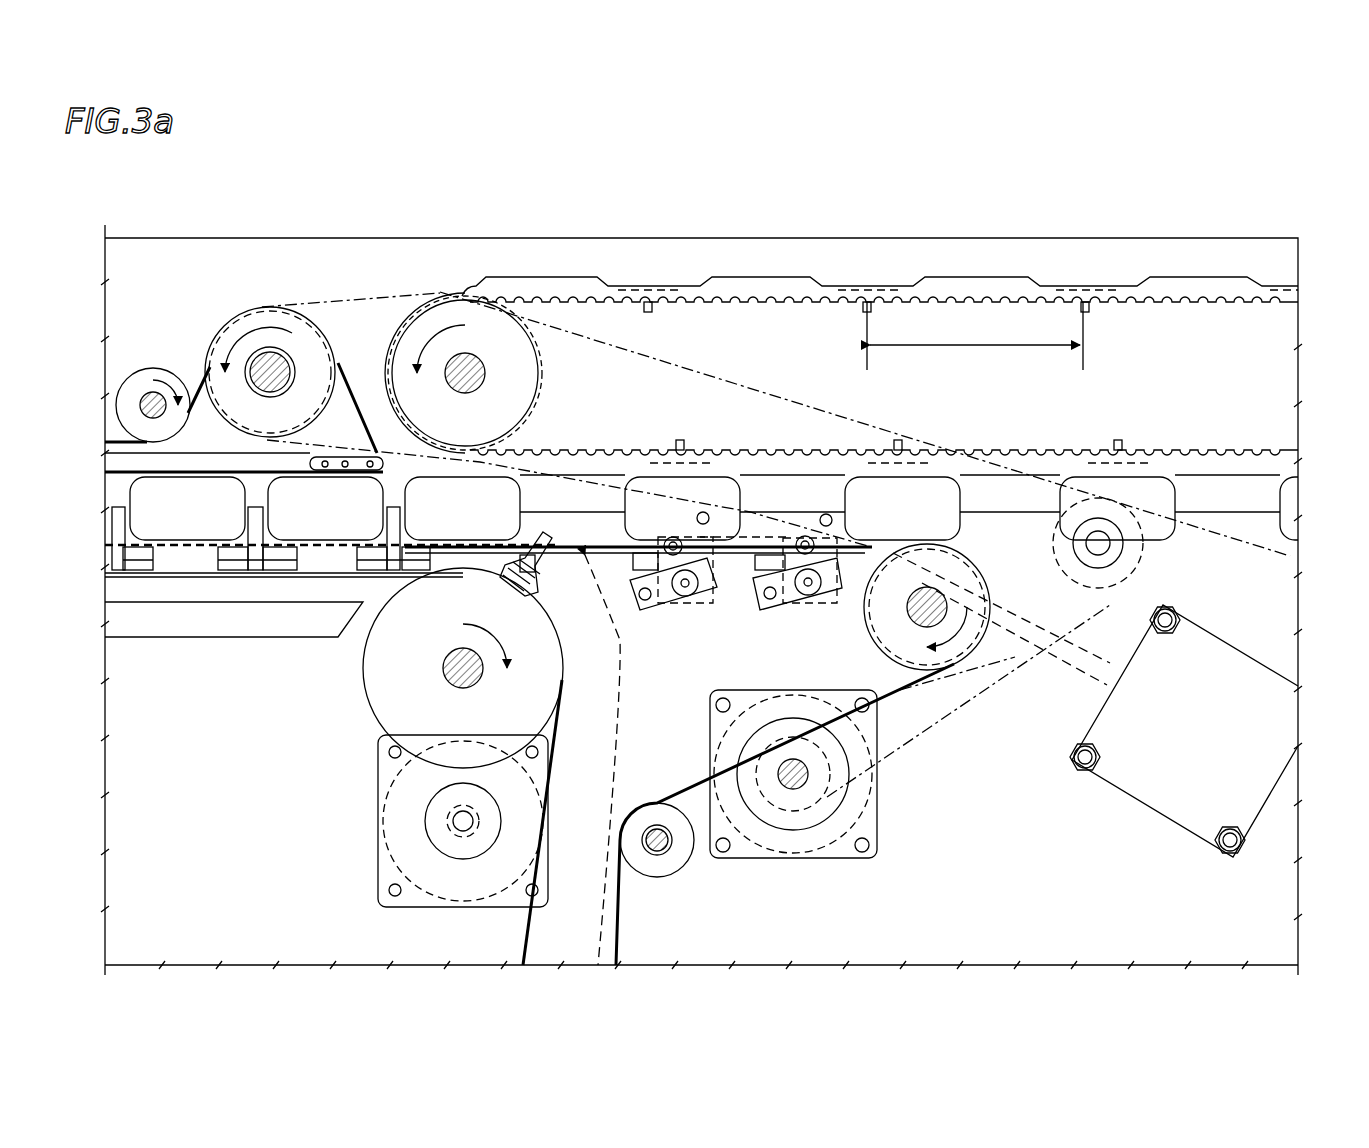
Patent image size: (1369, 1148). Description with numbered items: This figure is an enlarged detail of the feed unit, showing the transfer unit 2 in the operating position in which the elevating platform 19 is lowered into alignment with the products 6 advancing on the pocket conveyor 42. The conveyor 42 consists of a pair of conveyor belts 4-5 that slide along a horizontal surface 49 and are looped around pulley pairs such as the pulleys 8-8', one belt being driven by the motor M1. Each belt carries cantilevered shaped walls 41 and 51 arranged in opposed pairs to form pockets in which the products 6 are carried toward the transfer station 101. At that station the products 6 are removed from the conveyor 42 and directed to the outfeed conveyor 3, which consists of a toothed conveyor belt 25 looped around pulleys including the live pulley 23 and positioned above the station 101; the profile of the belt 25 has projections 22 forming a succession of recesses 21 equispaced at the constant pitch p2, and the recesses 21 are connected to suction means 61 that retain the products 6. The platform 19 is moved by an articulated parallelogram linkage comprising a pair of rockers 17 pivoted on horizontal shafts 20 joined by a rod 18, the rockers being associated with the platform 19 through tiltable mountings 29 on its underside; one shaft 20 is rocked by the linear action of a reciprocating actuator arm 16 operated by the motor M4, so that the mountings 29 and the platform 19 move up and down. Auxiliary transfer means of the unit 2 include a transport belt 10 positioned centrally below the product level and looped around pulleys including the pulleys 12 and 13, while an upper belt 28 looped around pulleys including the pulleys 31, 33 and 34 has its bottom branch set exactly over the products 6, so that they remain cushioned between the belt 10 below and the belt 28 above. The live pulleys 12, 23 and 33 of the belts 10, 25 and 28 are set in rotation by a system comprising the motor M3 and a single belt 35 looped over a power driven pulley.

The transfer unit 2 is at (668, 669).
The outfeed conveyor 3 is at (975, 276).
The products 6 is at (195, 521).
The transport belt 10 is at (621, 544).
The pulley 12 is at (962, 648).
The pulley 13 is at (675, 848).
The reciprocating actuator arm 16 is at (1110, 660).
The rockers 17 is at (690, 512).
The rod 18 is at (766, 536).
The elevating platform 19 is at (597, 578).
The horizontal shafts 20 is at (690, 590).
The recesses 21 is at (467, 278).
The projections 22 is at (1213, 276).
The pulley 23 is at (438, 320).
The toothed conveyor belt 25 is at (934, 276).
The belt 28 is at (185, 413).
The mountings 29 is at (640, 618).
The pulley 31 is at (121, 386).
The pulley 33 is at (253, 320).
The pulley 34 is at (368, 440).
The belt 35 is at (945, 710).
The supporting elements or shaped walls 41 is at (150, 565).
The conveyor 42 is at (199, 608).
The horizontal surface 49 is at (250, 588).
The supporting elements or shaped walls 51 is at (283, 578).
The suction means 61 is at (1112, 295).
The transfer station 101 is at (535, 481).
The pair of pulleys 8-8' is at (437, 668).
The conveyor belts 4-5 is at (525, 923).
The motor M1 is at (375, 840).
The motor M3 is at (778, 862).
The motor M4 is at (1215, 732).
The pitch p2 is at (975, 336).